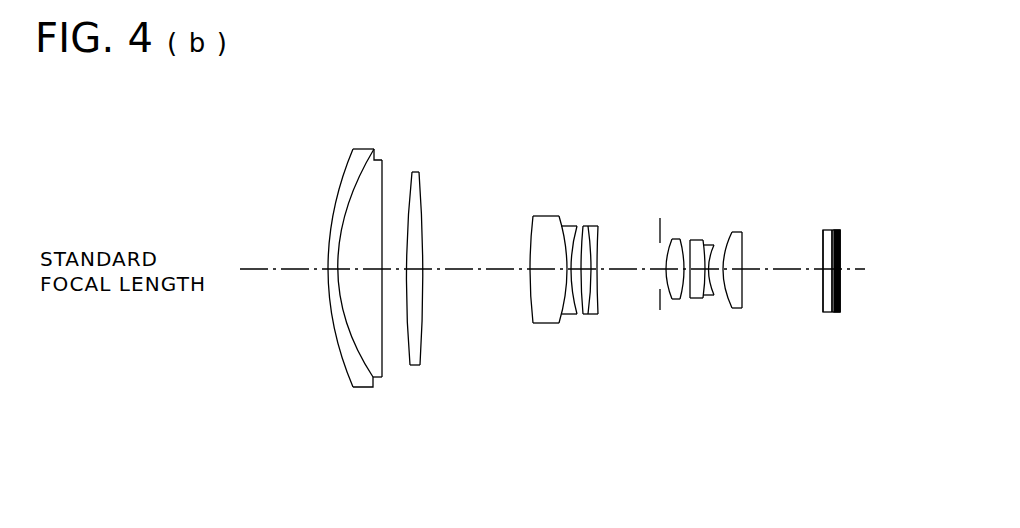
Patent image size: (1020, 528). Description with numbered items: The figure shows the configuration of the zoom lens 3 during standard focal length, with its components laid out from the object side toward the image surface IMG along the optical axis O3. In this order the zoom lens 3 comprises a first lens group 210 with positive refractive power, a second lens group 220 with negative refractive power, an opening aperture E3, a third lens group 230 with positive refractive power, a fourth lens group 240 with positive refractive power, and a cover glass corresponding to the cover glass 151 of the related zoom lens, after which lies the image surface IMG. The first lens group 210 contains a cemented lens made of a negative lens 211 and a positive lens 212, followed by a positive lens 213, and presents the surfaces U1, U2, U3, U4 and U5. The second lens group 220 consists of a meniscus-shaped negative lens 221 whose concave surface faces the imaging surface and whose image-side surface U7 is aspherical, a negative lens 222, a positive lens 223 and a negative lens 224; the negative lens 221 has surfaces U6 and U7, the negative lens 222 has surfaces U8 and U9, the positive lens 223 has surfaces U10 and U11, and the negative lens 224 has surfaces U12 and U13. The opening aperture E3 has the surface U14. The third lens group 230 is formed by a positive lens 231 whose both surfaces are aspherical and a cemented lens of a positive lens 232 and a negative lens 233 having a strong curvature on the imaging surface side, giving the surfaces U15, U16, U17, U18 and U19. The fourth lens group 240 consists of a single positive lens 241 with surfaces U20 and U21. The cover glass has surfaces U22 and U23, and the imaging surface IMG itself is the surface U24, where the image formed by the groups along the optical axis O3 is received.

The zoom lens 3 is at (846, 147).
The optical axis O3 is at (258, 267).
The opening aperture E3 is at (660, 218).
The image surface IMG is at (841, 243).
The cover glass 151 is at (852, 281).
The first lens group 210 is at (420, 424).
The negative lens 211 is at (309, 241).
The positive lens 212 is at (332, 241).
The positive lens 213 is at (429, 243).
The second lens group 220 is at (613, 424).
The negative lens 221 is at (526, 239).
The negative lens 222 is at (542, 275).
The positive lens 223 is at (575, 267).
The negative lens 224 is at (618, 286).
The third lens group 230 is at (713, 424).
The positive lens 231 is at (656, 293).
The positive lens 232 is at (708, 274).
The negative lens 233 is at (734, 287).
The fourth lens group 240 is at (747, 424).
The positive lens 241 is at (761, 254).
The surface U1 is at (328, 272).
The surface U2 is at (340, 292).
The surface U3 is at (356, 338).
The surface U4 is at (409, 305).
The surface U5 is at (411, 273).
The surface U6 is at (531, 271).
The surface U7 is at (545, 292).
The surface U8 is at (543, 314).
The surface U9 is at (562, 318).
The surface U10 is at (582, 316).
The surface U11 is at (598, 318).
The surface U12 is at (590, 292).
The surface U13 is at (594, 270).
The surface U14 is at (660, 292).
The surface U15 is at (663, 268).
The surface U16 is at (665, 300).
The surface U17 is at (697, 300).
The surface U18 is at (707, 303).
The surface U19 is at (718, 300).
The surface U20 is at (728, 288).
The surface U21 is at (742, 279).
The surface U22 is at (823, 272).
The surface U23 is at (838, 313).
The surface U24 is at (841, 300).